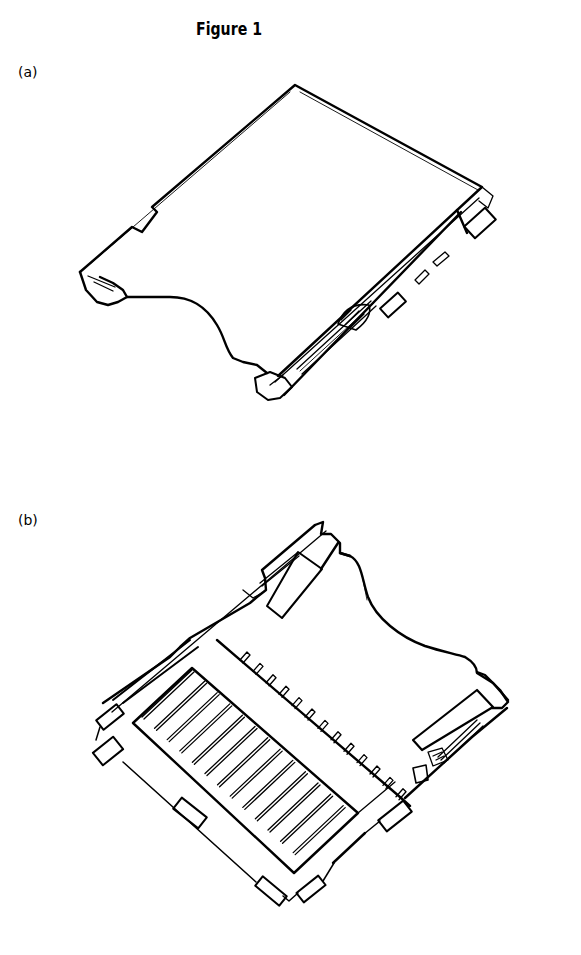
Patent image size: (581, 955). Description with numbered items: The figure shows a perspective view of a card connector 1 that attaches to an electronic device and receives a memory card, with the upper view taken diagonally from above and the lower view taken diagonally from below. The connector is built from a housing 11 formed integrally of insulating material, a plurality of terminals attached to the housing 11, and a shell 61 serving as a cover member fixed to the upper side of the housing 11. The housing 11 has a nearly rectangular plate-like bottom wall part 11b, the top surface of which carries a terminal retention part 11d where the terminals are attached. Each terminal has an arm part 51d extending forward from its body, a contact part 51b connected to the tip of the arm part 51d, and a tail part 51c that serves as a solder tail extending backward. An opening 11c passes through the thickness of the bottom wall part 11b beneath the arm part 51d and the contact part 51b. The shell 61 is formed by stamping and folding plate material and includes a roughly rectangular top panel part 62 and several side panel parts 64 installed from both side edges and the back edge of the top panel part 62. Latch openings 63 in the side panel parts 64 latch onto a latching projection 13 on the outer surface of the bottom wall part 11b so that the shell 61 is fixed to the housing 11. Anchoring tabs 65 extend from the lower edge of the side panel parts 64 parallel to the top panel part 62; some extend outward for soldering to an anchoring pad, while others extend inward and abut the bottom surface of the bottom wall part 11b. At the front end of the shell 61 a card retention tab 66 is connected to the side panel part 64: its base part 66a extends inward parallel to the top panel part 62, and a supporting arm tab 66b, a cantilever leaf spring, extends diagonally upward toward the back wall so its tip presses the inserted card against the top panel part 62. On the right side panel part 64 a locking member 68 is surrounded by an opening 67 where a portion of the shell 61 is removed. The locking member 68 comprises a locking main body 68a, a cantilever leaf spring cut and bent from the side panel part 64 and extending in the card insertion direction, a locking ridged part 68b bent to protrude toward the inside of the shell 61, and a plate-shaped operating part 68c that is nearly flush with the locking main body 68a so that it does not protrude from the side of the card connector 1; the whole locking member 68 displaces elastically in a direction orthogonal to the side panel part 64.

The card connector 1 is at (487, 112).
The housing 11 is at (167, 787).
The bottom wall part 11b is at (333, 873).
The opening 11c is at (268, 843).
The terminal retention part 11d is at (372, 812).
The latching projection 13 is at (156, 674).
The contact part 51b is at (250, 820).
The tail part 51c is at (272, 653).
The arm part 51d is at (358, 845).
The shell 61 is at (260, 112).
The top panel part 62 is at (344, 120).
The latch opening 63 is at (434, 262).
The side panel part 64 is at (413, 273).
The anchoring tab 65 is at (485, 232).
The card retention tab 66 is at (352, 555).
The base part 66a is at (100, 293).
The supporting arm tab 66b is at (328, 598).
The opening 67 is at (372, 320).
The locking member 68 is at (317, 369).
The locking main body 68a is at (313, 380).
The locking ridged part 68b is at (333, 345).
The operating part 68c is at (354, 332).